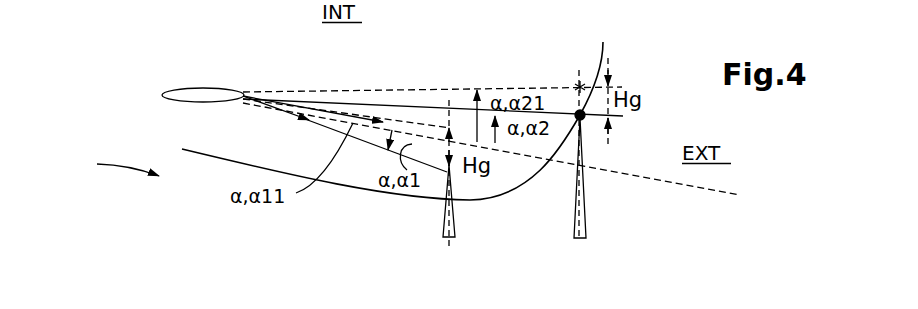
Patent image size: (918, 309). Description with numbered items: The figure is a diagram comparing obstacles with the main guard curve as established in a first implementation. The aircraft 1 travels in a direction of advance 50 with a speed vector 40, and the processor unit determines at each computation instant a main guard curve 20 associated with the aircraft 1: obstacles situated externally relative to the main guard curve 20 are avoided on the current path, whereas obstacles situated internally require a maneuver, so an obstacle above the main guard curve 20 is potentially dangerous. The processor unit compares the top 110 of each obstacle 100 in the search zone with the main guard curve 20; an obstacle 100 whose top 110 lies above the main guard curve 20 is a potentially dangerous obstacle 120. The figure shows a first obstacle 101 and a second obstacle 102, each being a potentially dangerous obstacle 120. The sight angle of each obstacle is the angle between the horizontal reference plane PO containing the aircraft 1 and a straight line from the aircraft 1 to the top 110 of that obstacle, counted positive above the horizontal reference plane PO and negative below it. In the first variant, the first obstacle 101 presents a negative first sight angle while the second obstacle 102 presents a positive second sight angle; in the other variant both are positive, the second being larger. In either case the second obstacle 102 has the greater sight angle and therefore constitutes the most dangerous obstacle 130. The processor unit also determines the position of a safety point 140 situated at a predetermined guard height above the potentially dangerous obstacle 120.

The aircraft 1 is at (212, 88).
The horizontal reference plane PO is at (160, 94).
The main guard curve 20 is at (347, 190).
The speed vector 40 is at (276, 112).
The direction of advance 50 is at (110, 166).
The obstacle 100 is at (521, 203).
The first obstacle 101 is at (449, 240).
The second obstacle 102 is at (581, 240).
The top of obstacle 110 is at (446, 171).
The potentially dangerous obstacle 120 is at (574, 110).
The most dangerous obstacle 130 is at (580, 87).
The safety point 140 is at (448, 100).